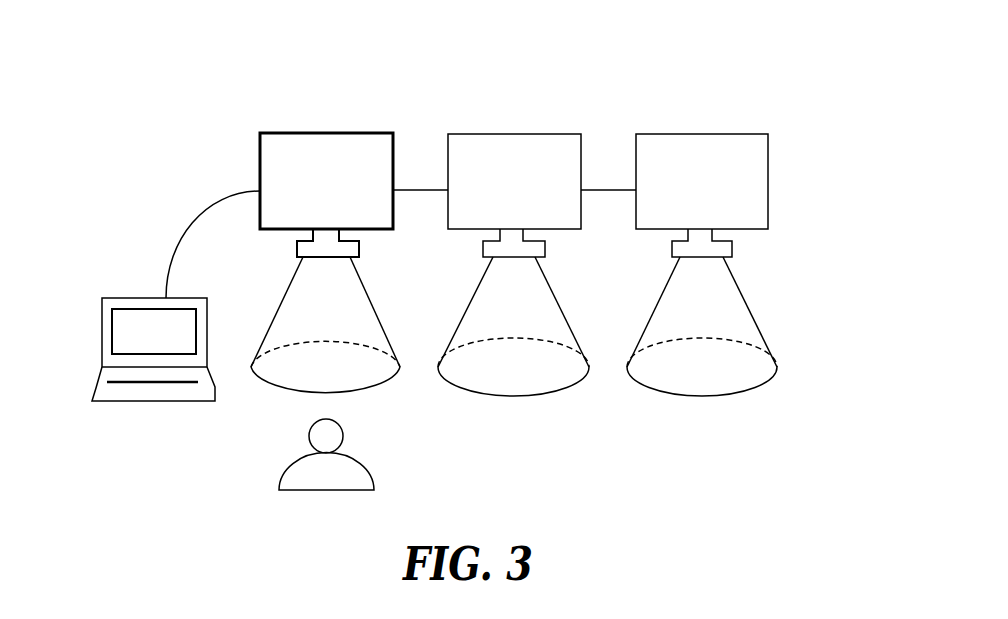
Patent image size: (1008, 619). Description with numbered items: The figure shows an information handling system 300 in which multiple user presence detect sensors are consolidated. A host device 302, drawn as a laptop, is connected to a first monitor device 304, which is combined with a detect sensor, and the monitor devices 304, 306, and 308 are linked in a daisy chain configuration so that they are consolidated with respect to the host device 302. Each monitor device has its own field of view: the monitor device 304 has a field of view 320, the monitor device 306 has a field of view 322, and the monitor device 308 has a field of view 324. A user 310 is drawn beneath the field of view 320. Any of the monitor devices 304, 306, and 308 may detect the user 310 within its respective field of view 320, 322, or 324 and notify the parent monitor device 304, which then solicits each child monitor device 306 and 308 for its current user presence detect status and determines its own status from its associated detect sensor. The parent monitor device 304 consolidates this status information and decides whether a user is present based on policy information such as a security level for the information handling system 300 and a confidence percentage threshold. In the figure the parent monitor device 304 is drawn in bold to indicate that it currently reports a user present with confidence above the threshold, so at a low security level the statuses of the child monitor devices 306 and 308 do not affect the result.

The information handling system 300 is at (617, 100).
The host device 302 is at (102, 328).
The parent monitor device 304 is at (347, 208).
The child monitor device 306 is at (535, 208).
The child monitor device 308 is at (723, 208).
The user 310 is at (287, 472).
The field of view 320 is at (288, 303).
The field of view 322 is at (475, 303).
The field of view 324 is at (660, 303).